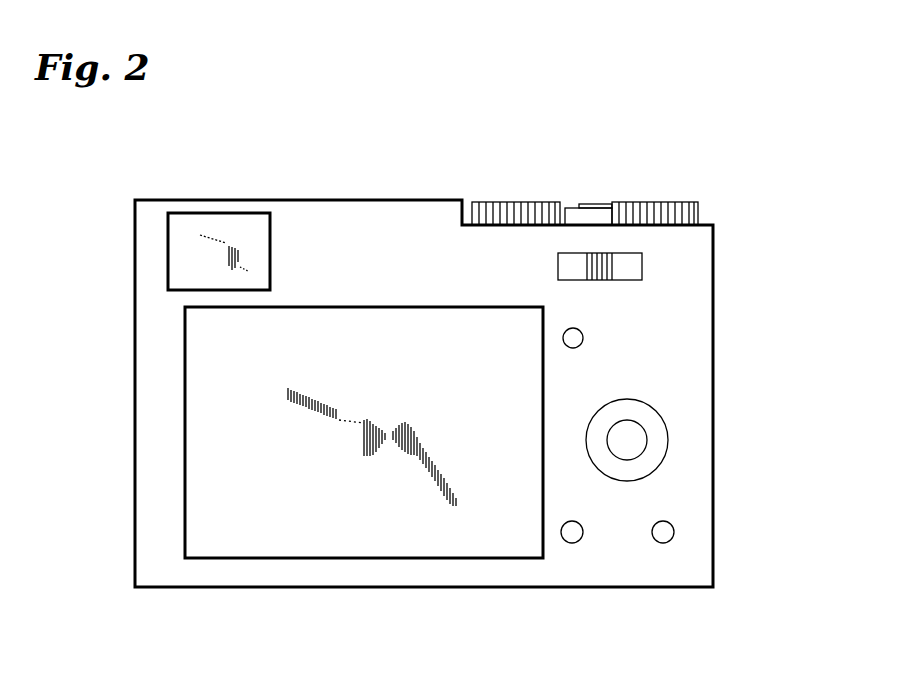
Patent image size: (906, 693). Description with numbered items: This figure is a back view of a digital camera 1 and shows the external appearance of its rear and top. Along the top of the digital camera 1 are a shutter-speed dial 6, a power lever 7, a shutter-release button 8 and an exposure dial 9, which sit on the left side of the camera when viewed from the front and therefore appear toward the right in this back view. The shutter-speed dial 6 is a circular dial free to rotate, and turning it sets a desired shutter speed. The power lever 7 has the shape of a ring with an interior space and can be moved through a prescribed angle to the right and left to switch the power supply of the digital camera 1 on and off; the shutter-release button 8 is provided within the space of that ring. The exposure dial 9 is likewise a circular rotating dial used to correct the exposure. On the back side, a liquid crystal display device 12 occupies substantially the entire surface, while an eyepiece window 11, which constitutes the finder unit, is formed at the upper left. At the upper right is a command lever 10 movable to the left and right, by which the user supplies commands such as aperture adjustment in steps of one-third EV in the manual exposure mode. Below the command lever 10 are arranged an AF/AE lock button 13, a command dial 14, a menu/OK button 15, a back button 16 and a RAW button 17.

The digital camera 1 is at (736, 144).
The shutter-speed dial 6 is at (510, 207).
The power lever 7 is at (568, 215).
The shutter-release button 8 is at (600, 204).
The exposure dial 9 is at (676, 208).
The command lever 10 is at (626, 273).
The eyepiece window 11 is at (268, 270).
The liquid crystal display device 12 is at (398, 327).
The AF/AE lock button 13 is at (583, 338).
The command dial 14 is at (652, 424).
The menu/OK button 15 is at (630, 447).
The back button 16 is at (573, 535).
The RAW button 17 is at (662, 535).